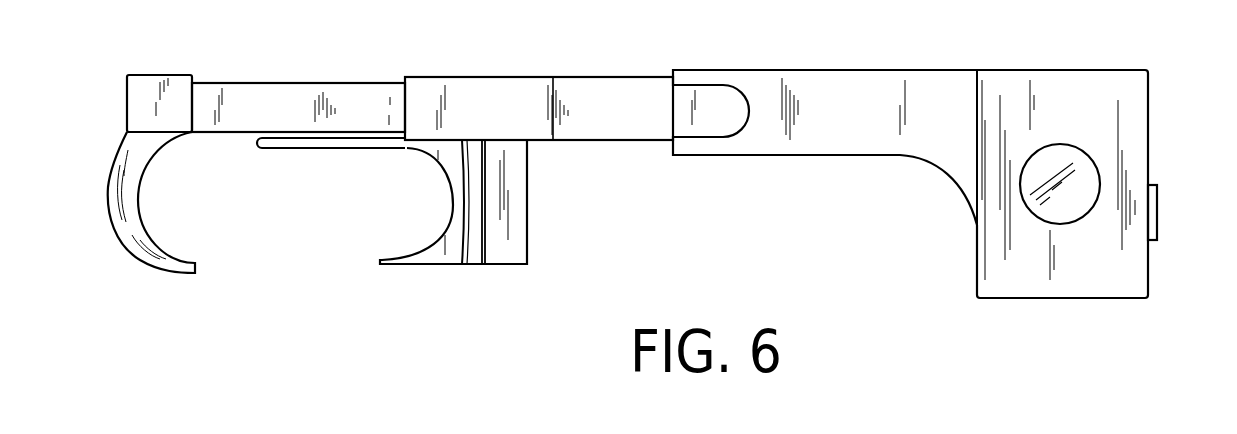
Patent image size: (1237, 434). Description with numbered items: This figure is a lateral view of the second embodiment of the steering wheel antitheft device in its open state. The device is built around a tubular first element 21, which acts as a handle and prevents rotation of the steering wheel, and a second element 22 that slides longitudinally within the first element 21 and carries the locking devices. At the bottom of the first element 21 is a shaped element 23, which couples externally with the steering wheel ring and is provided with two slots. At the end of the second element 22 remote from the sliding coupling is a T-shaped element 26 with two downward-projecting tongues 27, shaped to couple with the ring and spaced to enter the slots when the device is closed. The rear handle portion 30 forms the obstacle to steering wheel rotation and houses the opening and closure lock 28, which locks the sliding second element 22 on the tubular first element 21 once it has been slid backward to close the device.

The first element 21 is at (610, 88).
The second element 22 is at (358, 97).
The shaped element 23 is at (518, 165).
The T-shaped element 26 is at (146, 87).
The tongues 27 is at (118, 172).
The opening and closure lock 28 is at (1157, 200).
The rear handle portion 30 is at (948, 92).